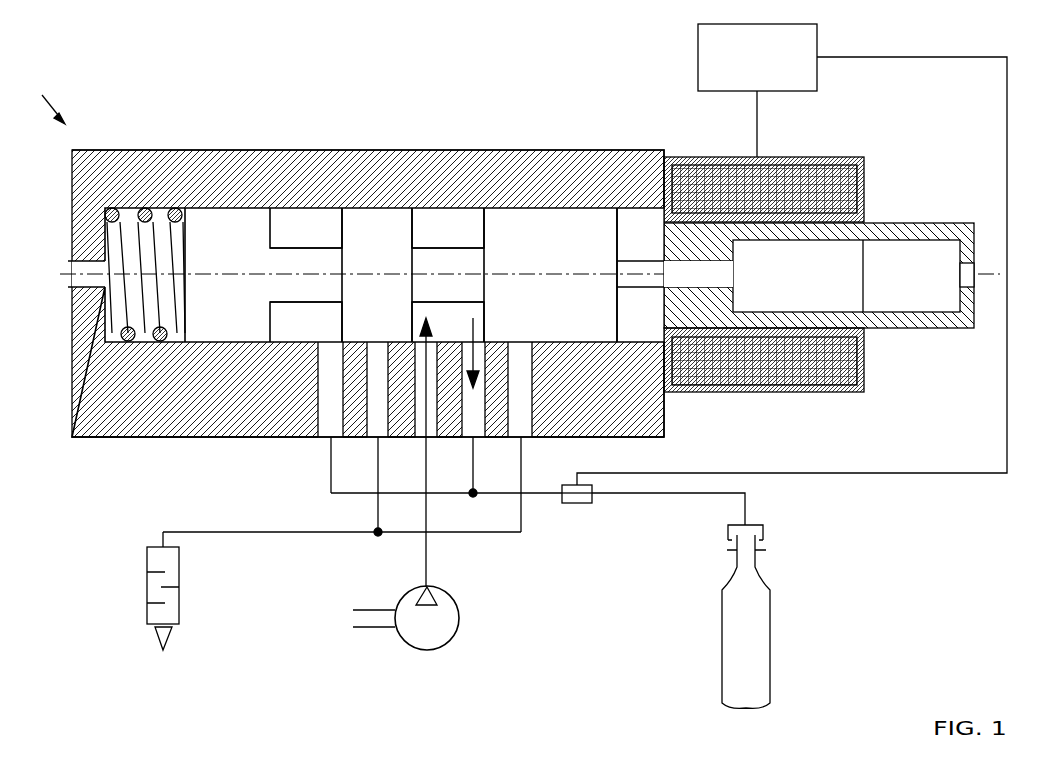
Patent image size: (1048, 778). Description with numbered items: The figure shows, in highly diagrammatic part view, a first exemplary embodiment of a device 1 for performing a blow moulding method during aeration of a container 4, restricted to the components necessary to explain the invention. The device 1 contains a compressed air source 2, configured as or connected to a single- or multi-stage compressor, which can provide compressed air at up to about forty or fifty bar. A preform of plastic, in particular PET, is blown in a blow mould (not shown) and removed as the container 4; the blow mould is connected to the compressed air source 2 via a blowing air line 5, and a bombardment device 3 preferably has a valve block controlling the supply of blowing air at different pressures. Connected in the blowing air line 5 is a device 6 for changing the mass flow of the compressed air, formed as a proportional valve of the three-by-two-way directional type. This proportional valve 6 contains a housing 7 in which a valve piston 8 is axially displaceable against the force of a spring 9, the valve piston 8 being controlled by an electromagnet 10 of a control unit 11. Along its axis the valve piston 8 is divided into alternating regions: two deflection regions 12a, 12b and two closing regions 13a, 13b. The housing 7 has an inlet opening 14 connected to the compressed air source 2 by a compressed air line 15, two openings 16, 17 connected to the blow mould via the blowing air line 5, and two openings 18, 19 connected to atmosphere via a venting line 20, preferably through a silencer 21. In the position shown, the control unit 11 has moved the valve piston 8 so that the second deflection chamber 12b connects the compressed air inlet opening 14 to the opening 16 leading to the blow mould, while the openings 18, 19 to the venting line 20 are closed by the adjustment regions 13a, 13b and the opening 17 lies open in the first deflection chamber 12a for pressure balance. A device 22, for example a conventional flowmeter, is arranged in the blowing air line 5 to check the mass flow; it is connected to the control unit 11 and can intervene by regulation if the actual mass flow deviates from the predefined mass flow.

The device 1 is at (48, 97).
The compressed air source 2 is at (441, 637).
The bombardment device 3 is at (765, 533).
The container 4 is at (770, 598).
The blowing air line 5 is at (648, 494).
The device for changing a mass flow 6 is at (72, 405).
The housing 7 is at (100, 438).
The valve piston 8 is at (233, 230).
The spring 9 is at (122, 205).
The electromagnet 10 is at (860, 180).
The control unit 11 is at (698, 47).
The first deflection region 12a is at (287, 242).
The second deflection region 12b is at (466, 242).
The first closing region 13a is at (382, 228).
The second closing region 13b is at (505, 228).
The inlet opening 14 is at (440, 440).
The compressed air line 15 is at (428, 565).
The opening 16 is at (490, 440).
The opening 17 is at (320, 440).
The opening 18 is at (530, 440).
The opening 19 is at (368, 440).
The venting line 20 is at (240, 534).
The silencer 21 is at (147, 586).
The device for checking the mass flow 22 is at (578, 504).